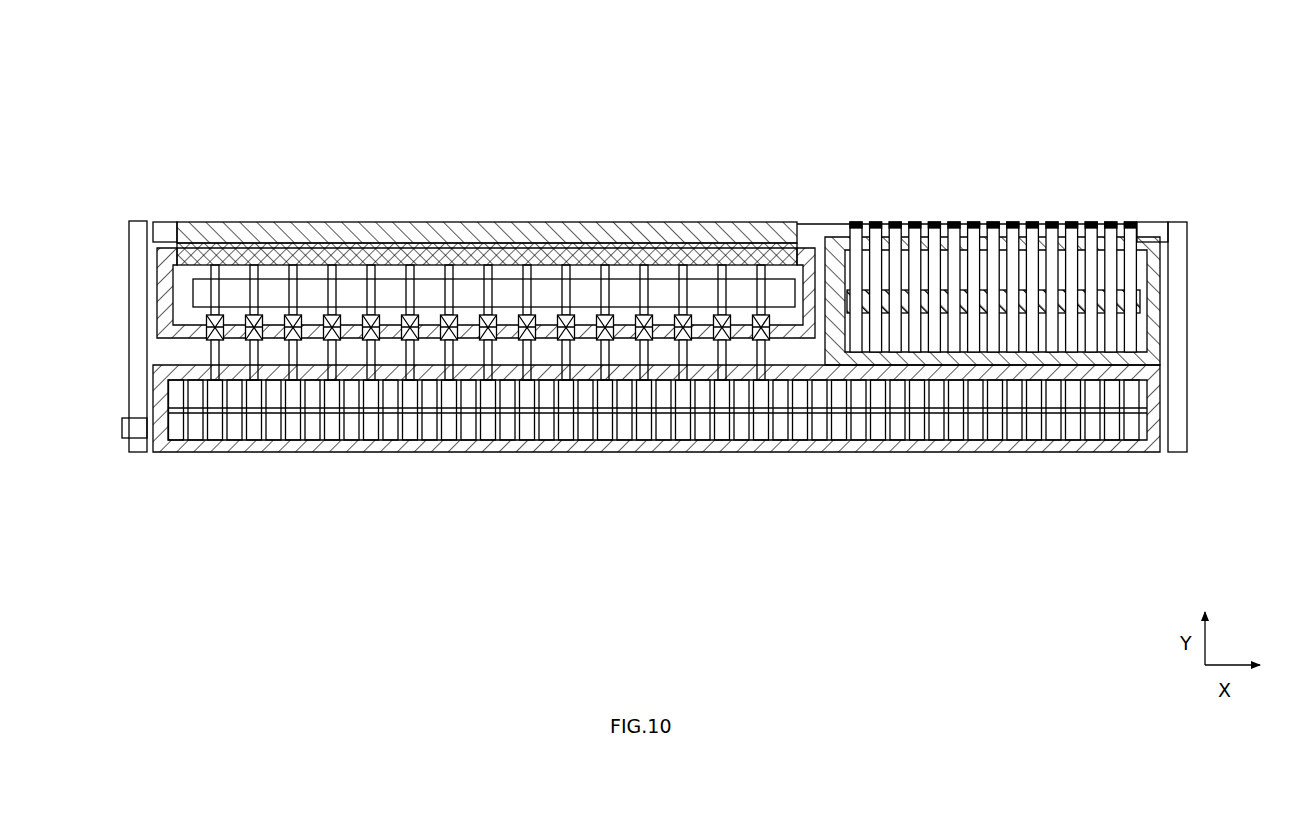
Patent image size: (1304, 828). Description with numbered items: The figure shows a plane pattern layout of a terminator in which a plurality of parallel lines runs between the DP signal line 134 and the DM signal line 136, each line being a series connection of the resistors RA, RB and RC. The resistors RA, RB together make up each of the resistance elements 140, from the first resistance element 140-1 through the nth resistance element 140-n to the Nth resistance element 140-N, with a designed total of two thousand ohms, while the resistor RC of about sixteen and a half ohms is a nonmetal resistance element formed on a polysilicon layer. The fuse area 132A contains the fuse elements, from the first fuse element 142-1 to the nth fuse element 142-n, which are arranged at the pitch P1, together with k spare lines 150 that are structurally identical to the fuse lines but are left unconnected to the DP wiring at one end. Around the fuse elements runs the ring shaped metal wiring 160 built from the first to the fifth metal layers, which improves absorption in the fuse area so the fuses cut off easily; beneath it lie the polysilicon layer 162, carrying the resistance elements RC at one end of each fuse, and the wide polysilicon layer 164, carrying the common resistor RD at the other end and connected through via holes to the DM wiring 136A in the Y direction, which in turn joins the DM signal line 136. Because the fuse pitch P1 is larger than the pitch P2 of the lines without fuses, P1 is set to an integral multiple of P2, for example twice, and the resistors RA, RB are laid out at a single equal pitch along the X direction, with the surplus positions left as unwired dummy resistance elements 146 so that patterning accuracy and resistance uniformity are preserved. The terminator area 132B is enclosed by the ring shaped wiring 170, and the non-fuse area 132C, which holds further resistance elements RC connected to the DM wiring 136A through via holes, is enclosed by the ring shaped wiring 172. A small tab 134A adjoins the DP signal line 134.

The DP wiring / fuse area 132A is at (783, 81).
The terminator area 132B is at (1150, 560).
The non-fuse area 132C is at (1160, 81).
The DP signal line 134 is at (130, 378).
The tab of drive plate 134A is at (123, 428).
The DM signal line 136 is at (1178, 423).
The DM wiring 136A is at (1148, 223).
The resistance element 140 is at (644, 410).
The first resistance element 140-1 is at (372, 428).
The nth resistance element 140-n is at (760, 428).
The Nth resistance element 140-N is at (1128, 430).
The first fuse element 142-1 is at (378, 293).
The nth fuse element 142-n is at (766, 293).
The dummy resistance element 146 is at (502, 428).
The spare line 150 is at (422, 133).
The ring shaped metal wiring 160 is at (160, 292).
The polysilicon layer 162 is at (630, 305).
The polysilicon layer 164 is at (528, 232).
The ring shaped wiring 170 is at (1155, 452).
The ring shaped wiring 172 is at (1150, 273).
The resistor RC is at (1140, 303).
The resistor RA is at (1070, 430).
The resistor RB is at (1066, 395).
The arrangement pitch of fuse elements P1 is at (488, 222).
The arrangement pitch of parallel lines without fuse elements P2 is at (972, 195).